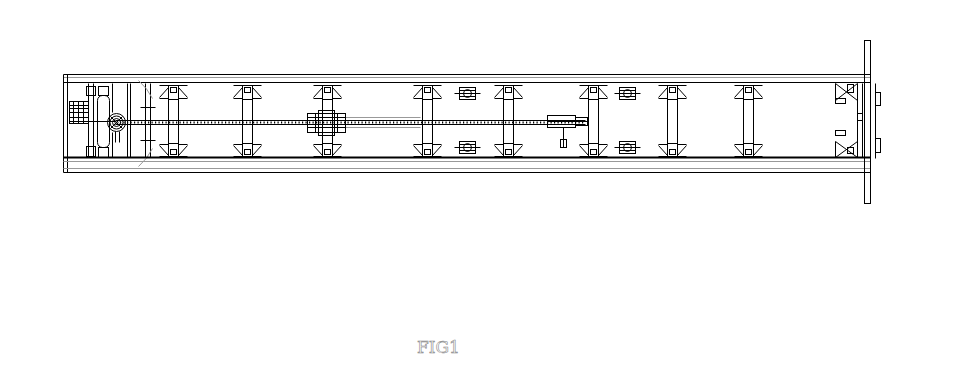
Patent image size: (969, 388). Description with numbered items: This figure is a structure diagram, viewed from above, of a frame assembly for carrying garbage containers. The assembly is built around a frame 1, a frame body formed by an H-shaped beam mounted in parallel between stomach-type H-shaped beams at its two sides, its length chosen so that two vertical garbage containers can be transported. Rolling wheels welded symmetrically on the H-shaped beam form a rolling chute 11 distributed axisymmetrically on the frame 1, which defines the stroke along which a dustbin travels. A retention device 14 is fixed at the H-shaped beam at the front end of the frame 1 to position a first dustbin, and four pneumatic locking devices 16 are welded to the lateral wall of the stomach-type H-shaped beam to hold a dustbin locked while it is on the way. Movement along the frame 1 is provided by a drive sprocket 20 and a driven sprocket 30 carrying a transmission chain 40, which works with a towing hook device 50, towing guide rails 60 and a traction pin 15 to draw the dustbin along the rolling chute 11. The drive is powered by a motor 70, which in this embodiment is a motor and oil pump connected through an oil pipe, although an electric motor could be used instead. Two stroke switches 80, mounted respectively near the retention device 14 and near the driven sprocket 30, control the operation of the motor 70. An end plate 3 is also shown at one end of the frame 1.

The frame 1 is at (710, 75).
The end plate 3 is at (863, 152).
The rolling chute 11 is at (428, 150).
The retention device 14 is at (110, 107).
The traction pin 15 is at (129, 107).
The pneumatic locking device 16 is at (468, 90).
The drive sprocket 20 is at (122, 95).
The driven sprocket 30 is at (598, 93).
The transmission chain 40 is at (280, 123).
The towing hook device 50 is at (328, 118).
The towing guide rails 60 is at (372, 123).
The motor 70 is at (88, 102).
The stroke switch 80 is at (563, 138).